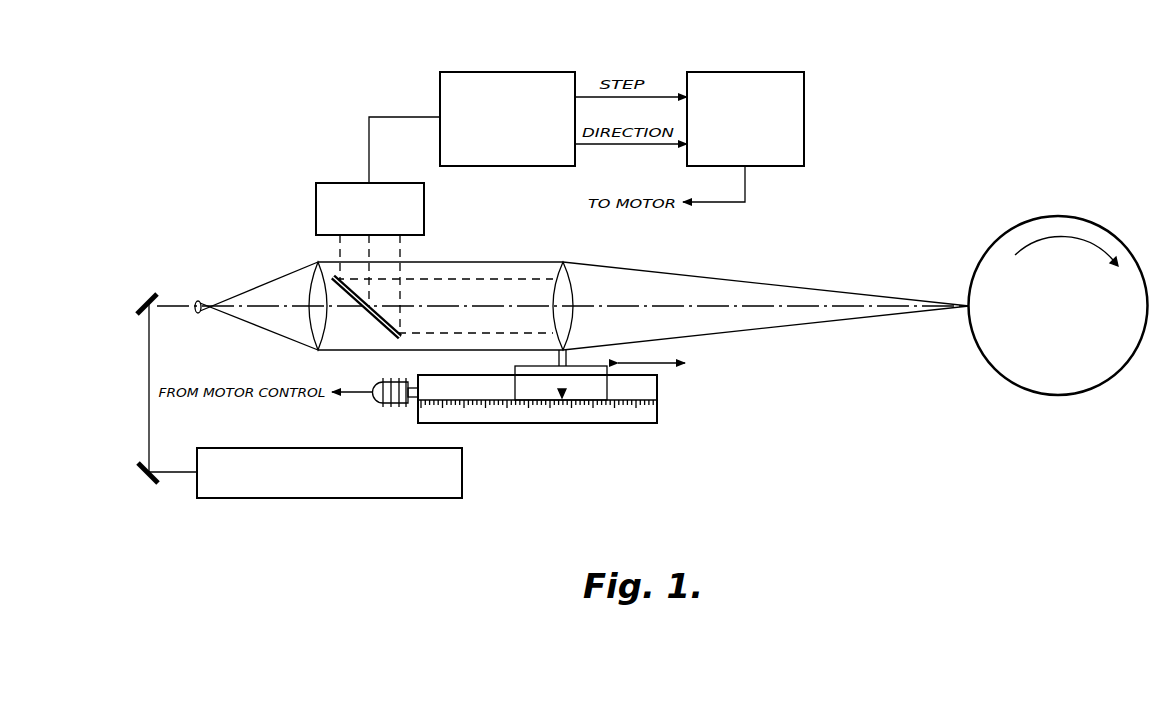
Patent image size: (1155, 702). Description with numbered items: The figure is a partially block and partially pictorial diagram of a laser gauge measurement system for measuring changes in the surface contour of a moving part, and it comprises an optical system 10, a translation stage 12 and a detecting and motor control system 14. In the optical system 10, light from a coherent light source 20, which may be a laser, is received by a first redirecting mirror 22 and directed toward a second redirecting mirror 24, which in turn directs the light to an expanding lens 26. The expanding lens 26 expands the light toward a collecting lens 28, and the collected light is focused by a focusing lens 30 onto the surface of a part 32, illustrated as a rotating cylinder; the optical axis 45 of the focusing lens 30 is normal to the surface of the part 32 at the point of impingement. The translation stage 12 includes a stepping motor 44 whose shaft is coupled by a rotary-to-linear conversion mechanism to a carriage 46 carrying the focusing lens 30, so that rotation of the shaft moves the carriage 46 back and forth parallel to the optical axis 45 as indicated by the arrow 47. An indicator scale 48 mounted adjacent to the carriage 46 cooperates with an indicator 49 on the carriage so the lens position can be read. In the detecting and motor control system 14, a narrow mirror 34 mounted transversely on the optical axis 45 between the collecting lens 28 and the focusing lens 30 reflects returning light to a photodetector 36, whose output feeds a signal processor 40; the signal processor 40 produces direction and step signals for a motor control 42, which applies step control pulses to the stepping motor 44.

The optical system 10 is at (210, 270).
The translation stage 12 is at (668, 404).
The detecting and motor control system 14 is at (403, 88).
The coherent light source 20 is at (355, 498).
The first redirecting mirror 22 is at (147, 485).
The second redirecting mirror 24 is at (152, 295).
The expanding lens 26 is at (200, 296).
The collecting lens 28 is at (309, 325).
The focusing lens 30 is at (572, 283).
The part 32 is at (992, 365).
The narrow mirror 34 is at (387, 320).
The photodetector 36 is at (320, 183).
The signal processor 40 is at (517, 72).
The motor control 42 is at (740, 72).
The stepping motor 44 is at (383, 404).
The optical axis 45 is at (700, 306).
The carriage 46 is at (650, 387).
The arrow 47 is at (655, 360).
The indicator scale 48 is at (618, 414).
The indicator 49 is at (543, 387).